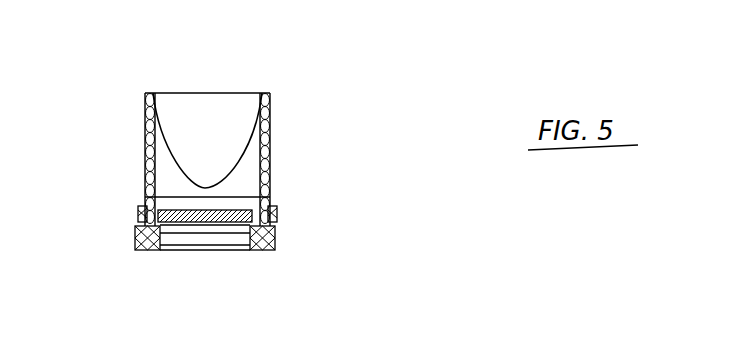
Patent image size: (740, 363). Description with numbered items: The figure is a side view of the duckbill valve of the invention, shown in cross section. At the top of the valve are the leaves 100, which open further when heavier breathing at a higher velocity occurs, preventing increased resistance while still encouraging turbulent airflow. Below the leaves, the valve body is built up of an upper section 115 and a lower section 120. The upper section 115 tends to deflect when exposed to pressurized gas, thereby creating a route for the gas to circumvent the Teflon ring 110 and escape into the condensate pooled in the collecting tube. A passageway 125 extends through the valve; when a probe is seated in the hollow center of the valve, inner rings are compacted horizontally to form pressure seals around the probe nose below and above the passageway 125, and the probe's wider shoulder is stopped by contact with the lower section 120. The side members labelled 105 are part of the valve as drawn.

The leaves 100 is at (212, 133).
The side wall 105 is at (142, 202).
The Teflon ring 110 is at (138, 215).
The upper section 115 is at (140, 203).
The lower section 120 is at (140, 248).
The passageway 125 is at (137, 228).